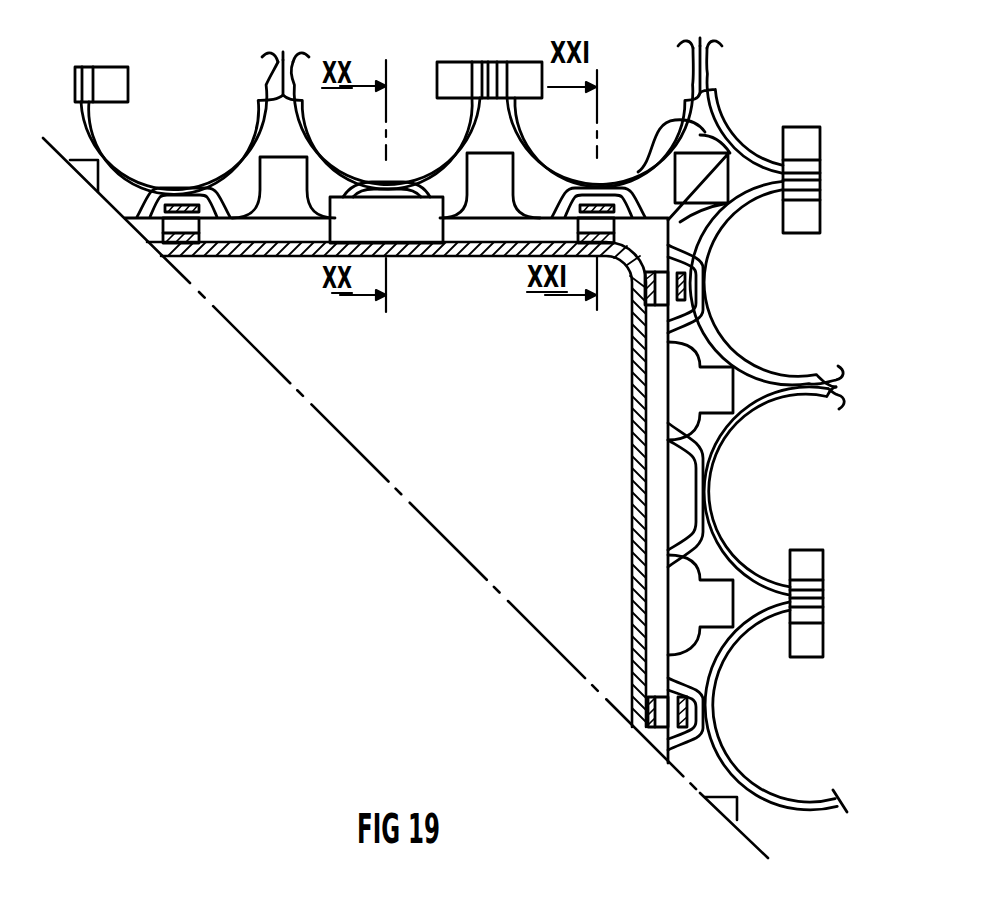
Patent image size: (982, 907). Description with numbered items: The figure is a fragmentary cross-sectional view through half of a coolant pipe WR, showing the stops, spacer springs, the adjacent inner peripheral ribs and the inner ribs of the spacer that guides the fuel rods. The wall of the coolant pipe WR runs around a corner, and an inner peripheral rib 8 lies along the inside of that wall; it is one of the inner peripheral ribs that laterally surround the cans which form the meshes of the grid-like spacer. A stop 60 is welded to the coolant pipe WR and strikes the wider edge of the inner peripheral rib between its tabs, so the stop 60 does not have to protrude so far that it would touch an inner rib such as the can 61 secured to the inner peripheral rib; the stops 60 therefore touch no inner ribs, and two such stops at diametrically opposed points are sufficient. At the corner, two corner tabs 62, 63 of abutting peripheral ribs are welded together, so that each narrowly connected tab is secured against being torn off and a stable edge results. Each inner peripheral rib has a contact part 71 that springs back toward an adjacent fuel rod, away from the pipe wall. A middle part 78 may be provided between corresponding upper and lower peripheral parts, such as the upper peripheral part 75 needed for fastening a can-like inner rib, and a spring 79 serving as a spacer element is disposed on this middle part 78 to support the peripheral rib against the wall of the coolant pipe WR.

The inner peripheral rib 8 is at (227, 217).
The stop 60 is at (407, 218).
The can 61 is at (300, 85).
The corner tab 62 is at (713, 117).
The corner tab 63 is at (743, 153).
The contact part 71 is at (392, 193).
The upper peripheral part 75 is at (705, 292).
The middle part 78 is at (670, 333).
The spring 79 is at (733, 240).
The coolant pipe WR is at (197, 247).